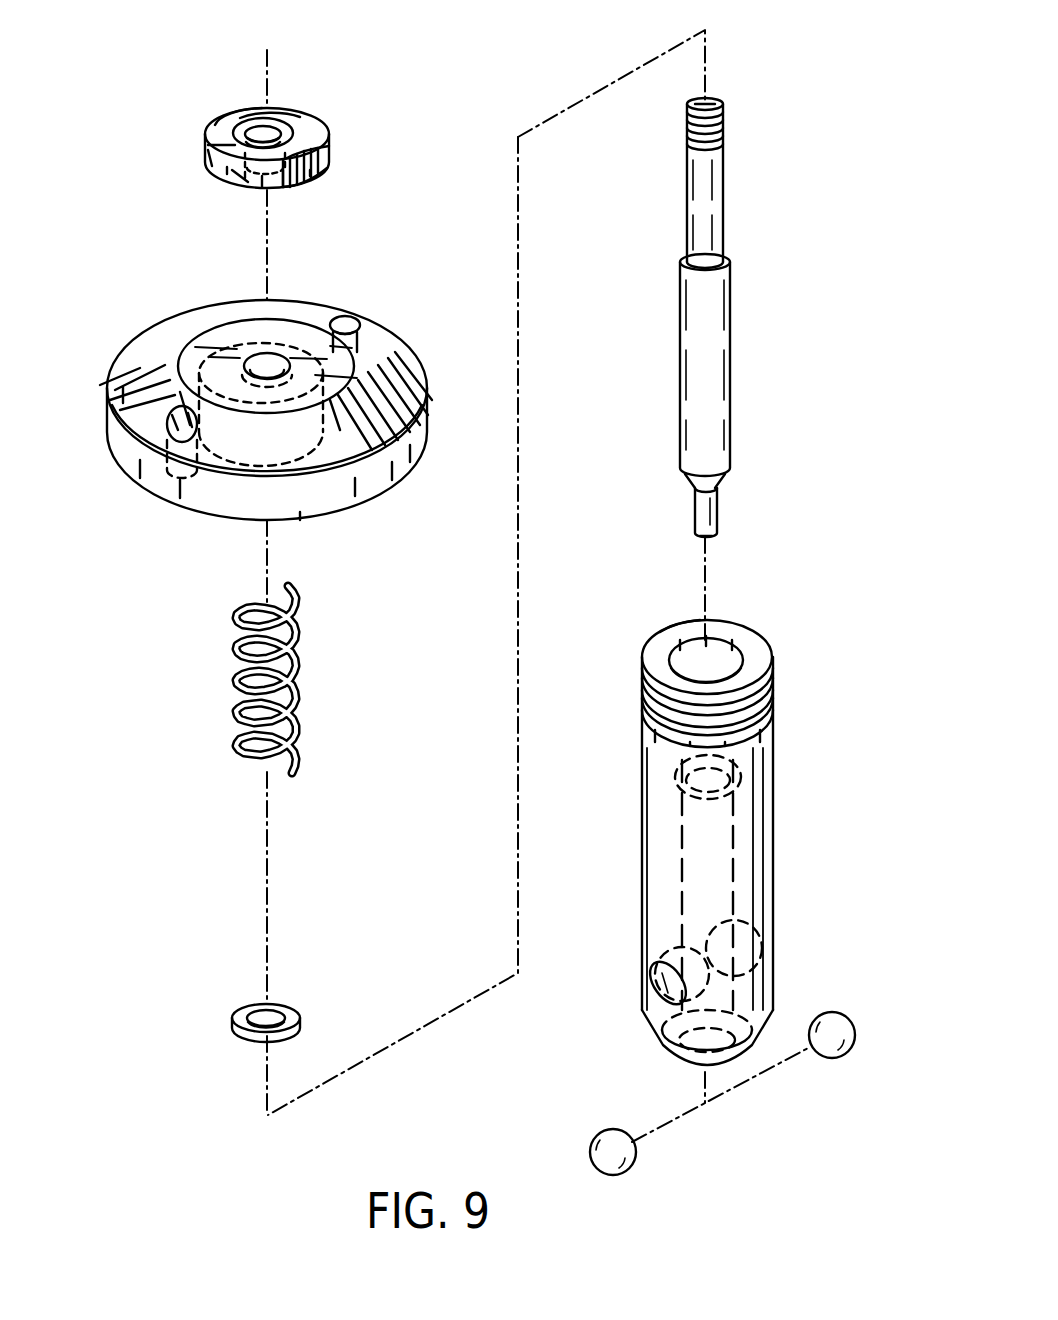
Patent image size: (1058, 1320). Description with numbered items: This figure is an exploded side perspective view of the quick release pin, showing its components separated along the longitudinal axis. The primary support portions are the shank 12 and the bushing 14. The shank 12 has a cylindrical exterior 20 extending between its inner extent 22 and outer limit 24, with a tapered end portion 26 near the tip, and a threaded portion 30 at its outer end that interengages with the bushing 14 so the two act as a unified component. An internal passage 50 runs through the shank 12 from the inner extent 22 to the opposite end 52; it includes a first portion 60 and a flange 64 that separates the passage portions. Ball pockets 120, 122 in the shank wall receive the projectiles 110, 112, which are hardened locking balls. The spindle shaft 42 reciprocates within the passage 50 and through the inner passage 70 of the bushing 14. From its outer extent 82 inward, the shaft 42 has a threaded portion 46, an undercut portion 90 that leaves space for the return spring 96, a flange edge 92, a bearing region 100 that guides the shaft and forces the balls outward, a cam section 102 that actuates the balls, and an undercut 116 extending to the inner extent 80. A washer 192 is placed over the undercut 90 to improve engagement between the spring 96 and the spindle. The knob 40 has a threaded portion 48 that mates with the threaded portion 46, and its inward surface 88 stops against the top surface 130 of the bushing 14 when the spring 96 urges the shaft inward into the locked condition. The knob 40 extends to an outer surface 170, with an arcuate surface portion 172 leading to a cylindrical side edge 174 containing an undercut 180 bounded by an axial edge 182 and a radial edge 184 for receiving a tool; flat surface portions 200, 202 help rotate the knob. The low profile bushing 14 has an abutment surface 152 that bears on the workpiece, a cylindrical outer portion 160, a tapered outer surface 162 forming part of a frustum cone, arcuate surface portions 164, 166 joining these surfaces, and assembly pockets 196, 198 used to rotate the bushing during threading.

The shank 12 is at (640, 837).
The bushing 14 is at (148, 507).
The exterior 20 is at (655, 890).
The inner extent 22 is at (730, 1036).
The outer limit 24 is at (655, 740).
The tapered end portion 26 is at (663, 1042).
The threaded portion 30 is at (776, 690).
The knob 40 is at (335, 117).
The spindle shaft 42 is at (732, 310).
The threaded portion 46 is at (722, 138).
The threaded portion 48 is at (252, 122).
The internal passage 50 is at (760, 855).
The opposite end 52 is at (676, 633).
The first portion 60 is at (738, 656).
The flange 64 is at (745, 775).
The inner passage 70 is at (275, 362).
The inner extent 80 is at (712, 536).
The outer extent 82 is at (712, 102).
The inward surface 88 is at (288, 190).
The undercut portion 90 is at (720, 196).
The flange edge 92 is at (729, 262).
The return spring 96 is at (300, 680).
The bearing region 100 is at (718, 384).
The cam section 102 is at (713, 490).
The projectile 110 is at (626, 1162).
The projectile 112 is at (838, 1052).
The undercut 116 is at (698, 514).
The ball pocket 120 is at (666, 984).
The ball pocket 122 is at (745, 945).
The top surface 130 is at (236, 330).
The abutment surface 152 is at (206, 522).
The outer portion 160 is at (373, 491).
The outer surface 162 is at (380, 395).
The arcuate surface portion 164 is at (392, 452).
The arcuate surface portion 166 is at (342, 370).
The outer surface 170 is at (286, 126).
The arcuate surface portion 172 is at (226, 146).
The side edge 174 is at (218, 172).
The undercut 180 is at (258, 198).
The axial edge 182 is at (300, 182).
The radial edge 184 is at (246, 184).
The washer 192 is at (290, 1008).
The assembly pocket 196 is at (180, 426).
The assembly pocket 198 is at (352, 326).
The flat surface portion 200 is at (216, 123).
The flat surface portion 202 is at (320, 152).